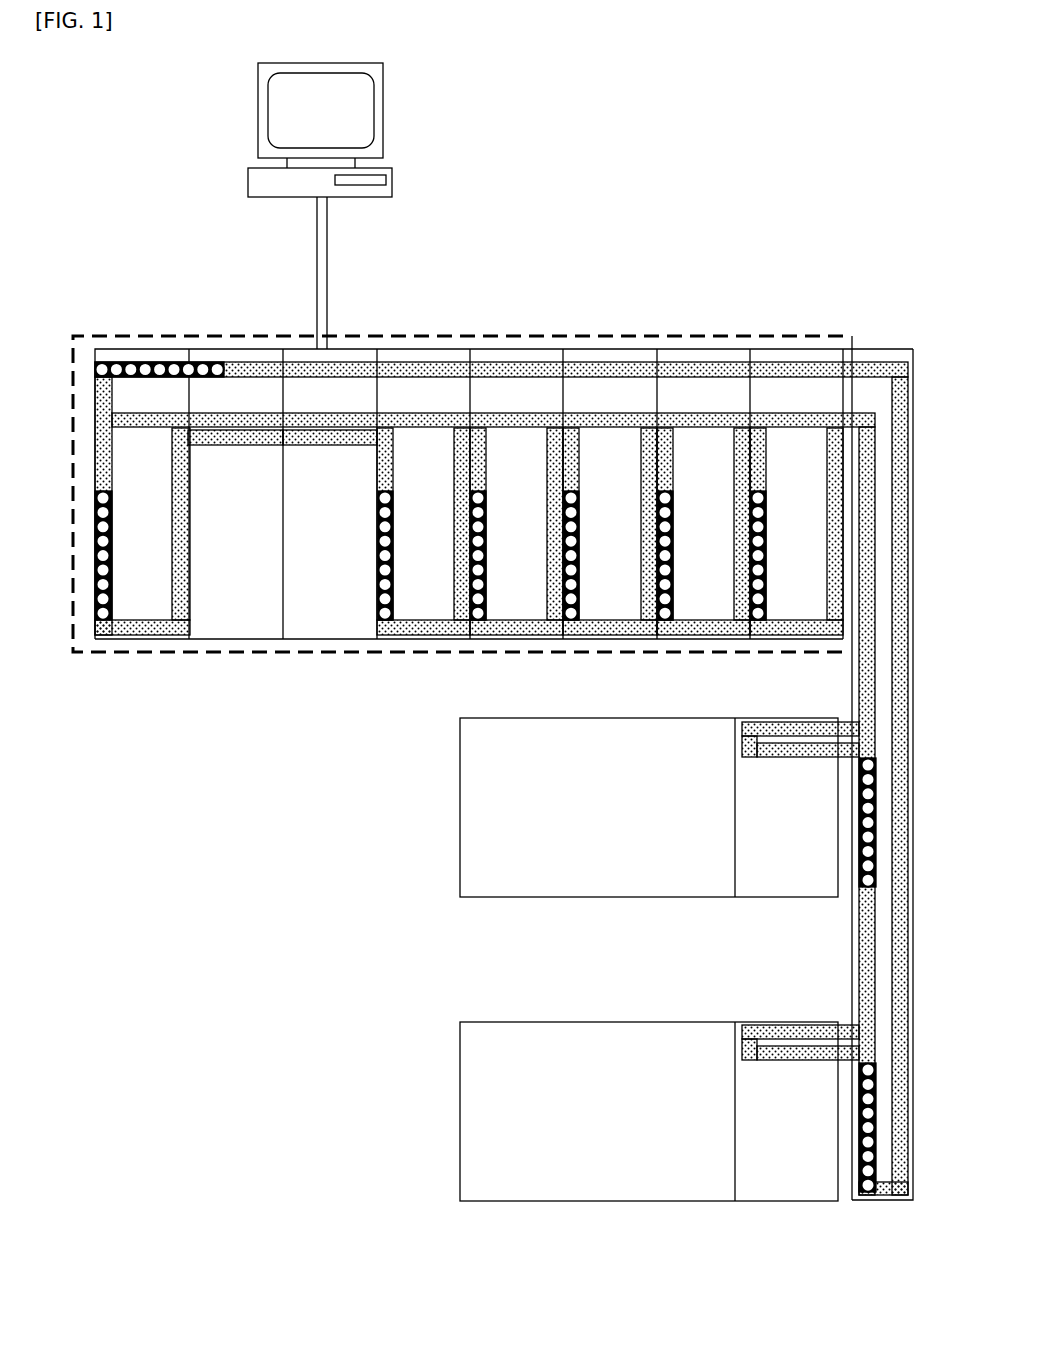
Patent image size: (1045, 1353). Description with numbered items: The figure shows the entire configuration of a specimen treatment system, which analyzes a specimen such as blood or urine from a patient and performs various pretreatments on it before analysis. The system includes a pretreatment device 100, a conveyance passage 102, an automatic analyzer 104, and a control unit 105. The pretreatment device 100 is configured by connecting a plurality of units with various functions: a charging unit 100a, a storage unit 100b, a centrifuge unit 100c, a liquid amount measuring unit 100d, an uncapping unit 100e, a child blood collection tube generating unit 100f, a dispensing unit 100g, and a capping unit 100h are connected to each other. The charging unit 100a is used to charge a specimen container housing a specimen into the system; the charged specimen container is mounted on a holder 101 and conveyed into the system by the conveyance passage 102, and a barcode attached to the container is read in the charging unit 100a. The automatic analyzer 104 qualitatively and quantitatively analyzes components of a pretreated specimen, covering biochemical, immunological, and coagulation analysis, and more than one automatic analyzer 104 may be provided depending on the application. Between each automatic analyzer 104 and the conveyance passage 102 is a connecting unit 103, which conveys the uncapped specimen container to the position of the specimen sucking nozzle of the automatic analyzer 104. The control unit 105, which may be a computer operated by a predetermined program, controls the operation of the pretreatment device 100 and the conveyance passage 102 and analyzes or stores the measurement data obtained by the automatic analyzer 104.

The pretreatment device 100 is at (493, 703).
The charging unit 100a is at (330, 554).
The storage unit 100b is at (235, 554).
The centrifuge unit 100c is at (434, 455).
The liquid amount measuring unit 100d is at (527, 455).
The uncapping unit 100e is at (615, 455).
The child blood collection tube generating unit 100f is at (707, 455).
The dispensing unit 100g is at (805, 453).
The capping unit 100h is at (142, 573).
The holder 101 is at (148, 315).
The conveyance passage 102 is at (894, 742).
The connecting unit 103 is at (797, 988).
The automatic analyzer 104 is at (649, 988).
The control unit 105 is at (379, 193).